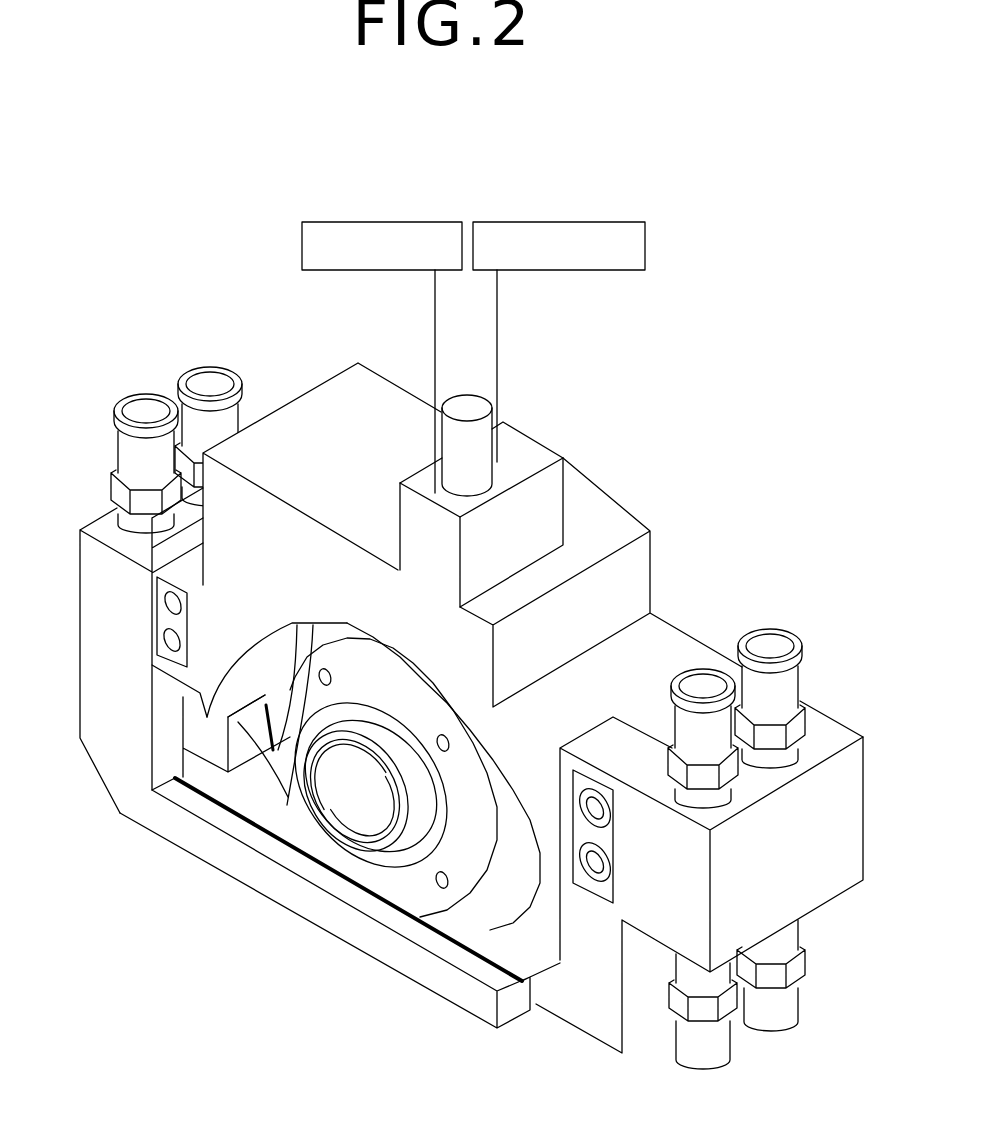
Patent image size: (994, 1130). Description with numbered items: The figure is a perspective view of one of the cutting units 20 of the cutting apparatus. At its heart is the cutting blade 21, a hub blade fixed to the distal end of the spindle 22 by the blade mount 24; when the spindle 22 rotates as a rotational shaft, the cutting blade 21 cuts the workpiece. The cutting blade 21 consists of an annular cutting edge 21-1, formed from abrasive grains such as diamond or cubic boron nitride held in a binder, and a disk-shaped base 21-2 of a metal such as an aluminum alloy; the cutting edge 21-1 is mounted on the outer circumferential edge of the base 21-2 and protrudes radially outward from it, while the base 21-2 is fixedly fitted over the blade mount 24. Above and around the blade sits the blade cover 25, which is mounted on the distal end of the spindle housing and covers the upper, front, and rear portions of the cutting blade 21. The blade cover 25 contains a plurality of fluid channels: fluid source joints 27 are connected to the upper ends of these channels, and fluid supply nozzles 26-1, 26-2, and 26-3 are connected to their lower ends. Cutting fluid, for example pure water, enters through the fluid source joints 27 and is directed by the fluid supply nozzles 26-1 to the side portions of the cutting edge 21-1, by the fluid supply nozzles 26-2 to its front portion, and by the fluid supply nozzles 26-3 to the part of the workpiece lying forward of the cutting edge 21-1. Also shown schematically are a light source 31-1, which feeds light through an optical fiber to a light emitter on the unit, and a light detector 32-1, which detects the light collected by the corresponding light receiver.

The cutting unit 20 is at (744, 319).
The cutting blade 21 is at (508, 905).
The cutting edge 21-1 is at (513, 940).
The base 21-2 is at (467, 920).
The spindle 22 is at (357, 797).
The blade mount 24 is at (290, 808).
The blade cover 25 is at (610, 527).
The fluid supply nozzles 26-1 is at (320, 917).
The fluid supply nozzles 26-2 is at (588, 1013).
The fluid supply nozzles 26-3 is at (793, 1003).
The fluid source joints 27 is at (128, 447).
The light source 31-1 is at (389, 222).
The light detector 32-1 is at (541, 222).